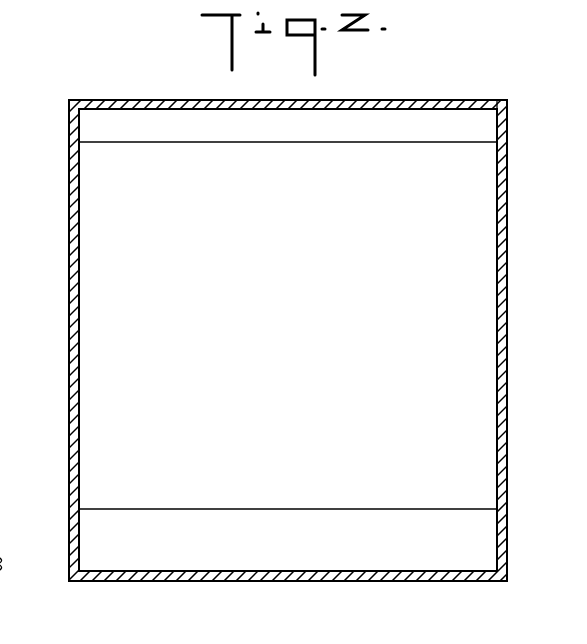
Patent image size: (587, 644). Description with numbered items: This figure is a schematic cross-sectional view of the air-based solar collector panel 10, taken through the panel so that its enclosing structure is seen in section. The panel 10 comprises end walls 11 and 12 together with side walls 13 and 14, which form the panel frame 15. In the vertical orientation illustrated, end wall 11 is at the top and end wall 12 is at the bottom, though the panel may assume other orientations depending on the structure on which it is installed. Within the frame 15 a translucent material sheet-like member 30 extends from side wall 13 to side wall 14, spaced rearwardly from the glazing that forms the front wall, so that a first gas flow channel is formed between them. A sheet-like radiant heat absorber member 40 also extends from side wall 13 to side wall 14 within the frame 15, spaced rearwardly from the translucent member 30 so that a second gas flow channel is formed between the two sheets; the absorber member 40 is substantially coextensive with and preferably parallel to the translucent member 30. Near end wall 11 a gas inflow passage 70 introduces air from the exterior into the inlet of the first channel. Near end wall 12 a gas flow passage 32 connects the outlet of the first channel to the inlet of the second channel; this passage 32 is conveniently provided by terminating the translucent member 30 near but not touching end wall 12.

The solar collector panel 10 is at (293, 300).
The end wall 11 is at (426, 100).
The end wall 12 is at (372, 582).
The side wall 13 is at (73, 230).
The side wall 14 is at (506, 259).
The panel frame 15 is at (510, 63).
The translucent material sheet-like member 30 is at (471, 216).
The gas flow passage 32 is at (252, 536).
The sheet-like radiant heat absorber member 40 is at (468, 556).
The gas inflow passage 70 is at (309, 134).